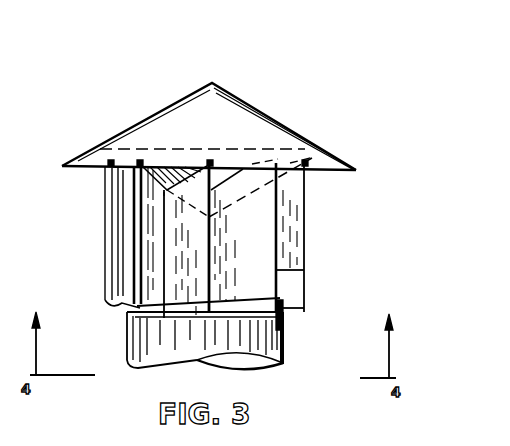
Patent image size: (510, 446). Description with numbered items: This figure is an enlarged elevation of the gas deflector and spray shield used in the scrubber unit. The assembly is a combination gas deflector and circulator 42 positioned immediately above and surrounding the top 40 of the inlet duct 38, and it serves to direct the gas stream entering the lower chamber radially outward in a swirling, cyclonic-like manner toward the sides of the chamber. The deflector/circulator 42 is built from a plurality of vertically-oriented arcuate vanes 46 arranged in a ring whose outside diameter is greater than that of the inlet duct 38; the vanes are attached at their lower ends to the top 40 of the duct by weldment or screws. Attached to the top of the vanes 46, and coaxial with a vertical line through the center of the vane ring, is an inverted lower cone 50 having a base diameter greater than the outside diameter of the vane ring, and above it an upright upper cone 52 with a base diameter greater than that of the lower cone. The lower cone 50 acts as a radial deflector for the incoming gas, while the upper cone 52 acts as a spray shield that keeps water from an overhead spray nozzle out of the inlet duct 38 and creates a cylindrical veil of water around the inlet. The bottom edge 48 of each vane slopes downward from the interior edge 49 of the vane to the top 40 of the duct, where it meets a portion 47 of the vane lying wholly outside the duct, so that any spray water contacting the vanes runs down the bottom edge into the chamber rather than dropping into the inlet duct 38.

The inlet duct 38 is at (284, 341).
The top of the inlet duct 40 is at (166, 313).
The combination gas deflector and circulator 42 is at (102, 268).
The vertically-oriented arcuate vanes 46 is at (305, 231).
The portion of the vane wholly outside of the duct 47 is at (287, 308).
The bottom edge of the vane 48 is at (240, 304).
The interior edge of the vane 49 is at (173, 270).
The inverted lower cone 50 is at (153, 170).
The upright upper cone 52 is at (267, 112).